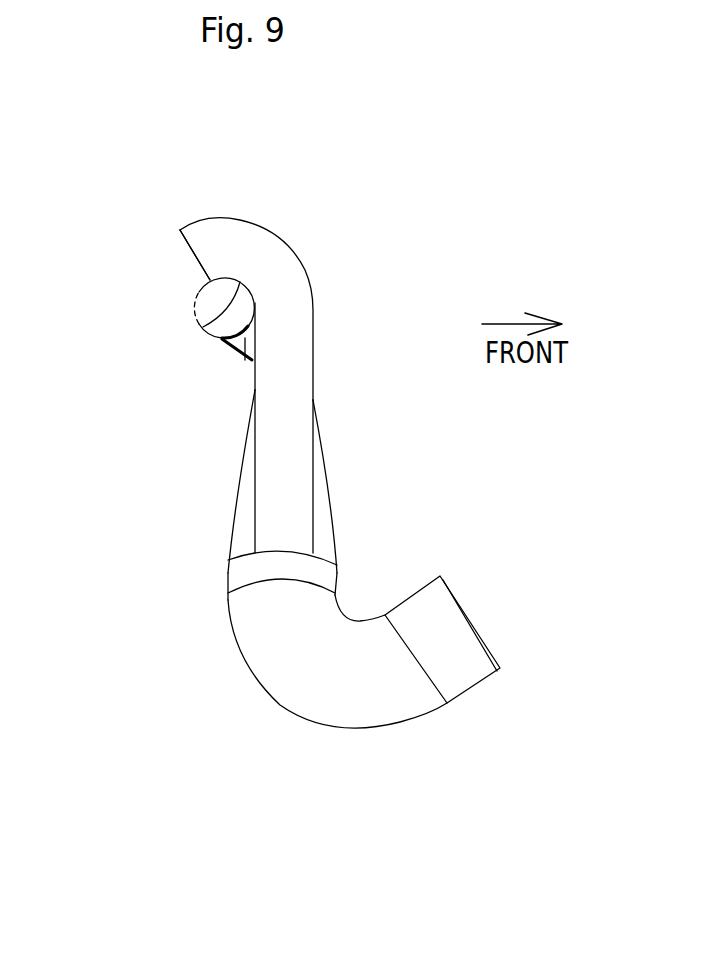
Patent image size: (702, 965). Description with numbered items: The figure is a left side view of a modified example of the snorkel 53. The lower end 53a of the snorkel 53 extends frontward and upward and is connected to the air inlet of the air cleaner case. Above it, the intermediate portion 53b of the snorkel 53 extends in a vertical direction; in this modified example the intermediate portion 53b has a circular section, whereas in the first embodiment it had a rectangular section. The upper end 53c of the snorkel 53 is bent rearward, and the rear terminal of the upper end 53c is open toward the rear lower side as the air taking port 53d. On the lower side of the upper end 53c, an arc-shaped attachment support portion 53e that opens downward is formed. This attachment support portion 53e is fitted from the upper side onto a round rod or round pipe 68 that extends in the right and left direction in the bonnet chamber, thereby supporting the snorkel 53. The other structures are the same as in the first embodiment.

The snorkel 53 is at (417, 550).
The lower end of the snorkel 53a is at (460, 673).
The intermediate portion of the snorkel 53b is at (275, 493).
The upper end of the snorkel 53c is at (288, 242).
The air taking port 53d is at (196, 259).
The attachment support portion 53e is at (200, 325).
The round rod or round pipe 68 is at (215, 338).